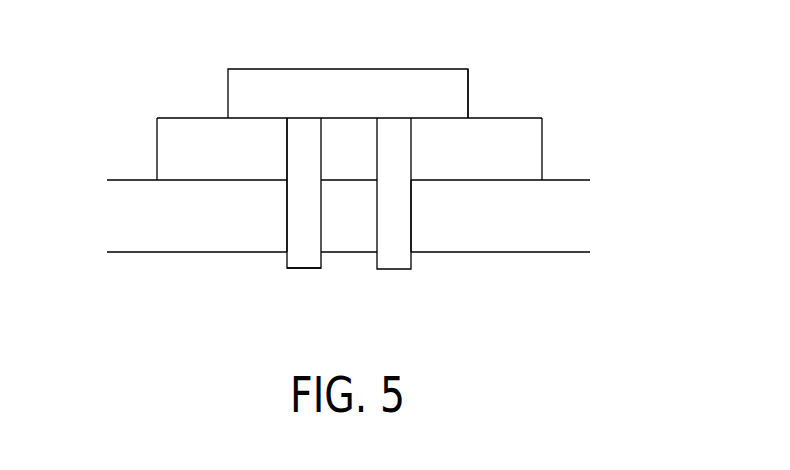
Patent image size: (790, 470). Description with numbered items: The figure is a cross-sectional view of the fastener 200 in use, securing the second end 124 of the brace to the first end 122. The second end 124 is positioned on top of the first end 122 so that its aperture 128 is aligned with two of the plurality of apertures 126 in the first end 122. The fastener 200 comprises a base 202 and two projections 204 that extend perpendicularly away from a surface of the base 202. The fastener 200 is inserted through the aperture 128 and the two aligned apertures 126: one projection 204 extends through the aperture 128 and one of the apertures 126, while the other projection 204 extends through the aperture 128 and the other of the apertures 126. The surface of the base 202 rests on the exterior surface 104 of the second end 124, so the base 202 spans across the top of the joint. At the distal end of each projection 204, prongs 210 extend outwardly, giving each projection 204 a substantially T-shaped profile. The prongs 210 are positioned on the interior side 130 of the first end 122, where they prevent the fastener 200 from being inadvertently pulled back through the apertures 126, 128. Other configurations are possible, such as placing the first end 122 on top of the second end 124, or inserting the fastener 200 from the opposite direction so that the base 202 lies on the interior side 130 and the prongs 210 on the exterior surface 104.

The exterior surface 104 is at (500, 116).
The first end 122 is at (560, 228).
The second end 124 is at (522, 152).
The plurality of apertures 126 is at (287, 227).
The aperture 128 is at (287, 162).
The interior side 130 is at (545, 253).
The fastener 200 is at (352, 69).
The base 202 is at (453, 102).
The projection 204 is at (304, 242).
The prongs 210 is at (308, 270).